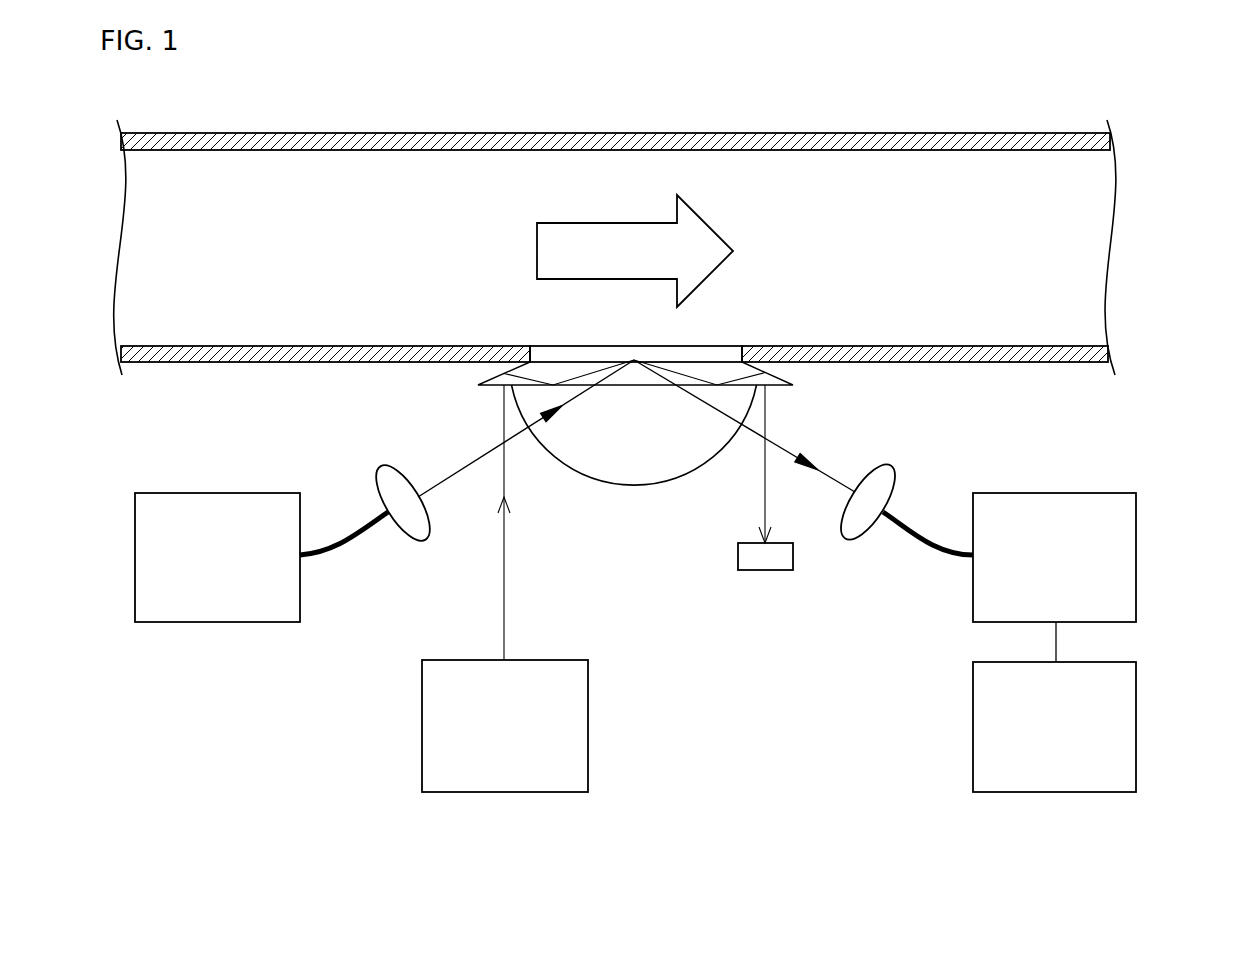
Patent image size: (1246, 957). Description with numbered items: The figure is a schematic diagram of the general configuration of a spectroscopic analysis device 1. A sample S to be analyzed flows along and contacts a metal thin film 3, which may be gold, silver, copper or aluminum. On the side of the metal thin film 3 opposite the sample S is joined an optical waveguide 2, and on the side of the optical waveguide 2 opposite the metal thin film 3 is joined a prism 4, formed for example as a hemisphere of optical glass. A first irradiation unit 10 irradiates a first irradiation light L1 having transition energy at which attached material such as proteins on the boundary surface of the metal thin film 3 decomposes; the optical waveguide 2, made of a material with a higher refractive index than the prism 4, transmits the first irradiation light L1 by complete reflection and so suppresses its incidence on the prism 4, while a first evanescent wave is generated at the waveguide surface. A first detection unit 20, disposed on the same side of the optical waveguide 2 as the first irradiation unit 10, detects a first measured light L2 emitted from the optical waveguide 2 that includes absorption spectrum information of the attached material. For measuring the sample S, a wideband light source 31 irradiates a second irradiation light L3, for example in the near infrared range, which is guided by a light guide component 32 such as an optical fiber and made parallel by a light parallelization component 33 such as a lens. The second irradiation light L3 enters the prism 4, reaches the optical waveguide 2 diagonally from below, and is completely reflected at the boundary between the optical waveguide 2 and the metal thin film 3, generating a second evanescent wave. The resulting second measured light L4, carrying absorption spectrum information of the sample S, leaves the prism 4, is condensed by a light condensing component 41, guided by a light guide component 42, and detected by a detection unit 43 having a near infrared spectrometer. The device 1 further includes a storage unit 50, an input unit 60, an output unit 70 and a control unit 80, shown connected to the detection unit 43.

The spectroscopic analysis device 1 is at (773, 893).
The optical waveguide 2 is at (485, 373).
The metal thin film 3 is at (556, 350).
The prism 4 is at (628, 487).
The first irradiation unit 10 is at (422, 717).
The first detection unit 20 is at (762, 572).
The wideband light source 31 is at (197, 492).
The light guide component 32 is at (347, 548).
The light parallelization component 33 is at (383, 468).
The light condensing component 41 is at (895, 467).
The light guide component 42 is at (918, 522).
The detection unit 43 is at (1080, 493).
The storage unit 50 is at (1106, 773).
The input unit 60 is at (1106, 773).
The output unit 70 is at (1106, 773).
The control unit 80 is at (1065, 793).
The first irradiation light L1 is at (504, 612).
The first measured light L2 is at (762, 487).
The second irradiation light L3 is at (460, 472).
The second measured light L4 is at (783, 437).
The sample S is at (612, 222).